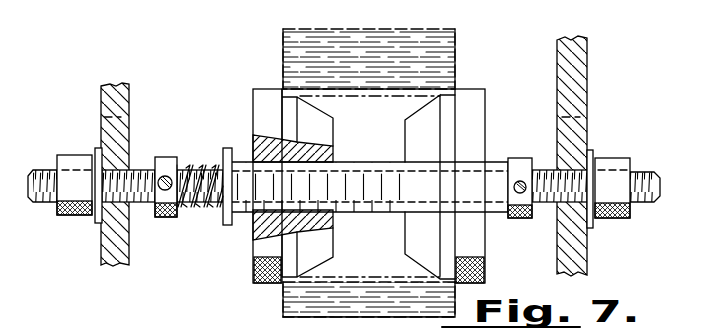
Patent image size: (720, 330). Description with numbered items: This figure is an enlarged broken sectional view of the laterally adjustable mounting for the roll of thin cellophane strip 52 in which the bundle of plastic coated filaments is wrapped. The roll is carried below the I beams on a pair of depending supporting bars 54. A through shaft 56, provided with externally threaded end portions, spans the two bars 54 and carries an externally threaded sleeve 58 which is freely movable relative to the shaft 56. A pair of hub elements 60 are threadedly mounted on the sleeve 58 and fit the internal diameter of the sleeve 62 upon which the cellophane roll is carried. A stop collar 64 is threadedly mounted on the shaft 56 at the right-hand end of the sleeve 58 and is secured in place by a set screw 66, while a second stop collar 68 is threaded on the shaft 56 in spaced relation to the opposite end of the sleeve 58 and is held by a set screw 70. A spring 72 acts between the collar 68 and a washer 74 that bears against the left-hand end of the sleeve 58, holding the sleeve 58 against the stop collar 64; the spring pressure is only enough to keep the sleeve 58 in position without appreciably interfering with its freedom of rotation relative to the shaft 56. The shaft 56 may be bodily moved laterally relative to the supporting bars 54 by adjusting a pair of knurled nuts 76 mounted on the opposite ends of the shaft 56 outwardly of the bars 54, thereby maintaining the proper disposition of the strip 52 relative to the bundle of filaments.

The strip 52 is at (458, 31).
The supporting bars 54 is at (101, 89).
The through shaft 56 is at (643, 172).
The externally threaded sleeve 58 is at (487, 166).
The hub elements 60 is at (253, 91).
The sleeve 62 is at (362, 98).
The stop collar 64 is at (523, 218).
The set screw 66 is at (518, 172).
The second stop collar 68 is at (160, 157).
The set screw 70 is at (170, 176).
The spring 72 is at (198, 208).
The washer 74 is at (227, 222).
The knurled nuts 76 is at (77, 217).